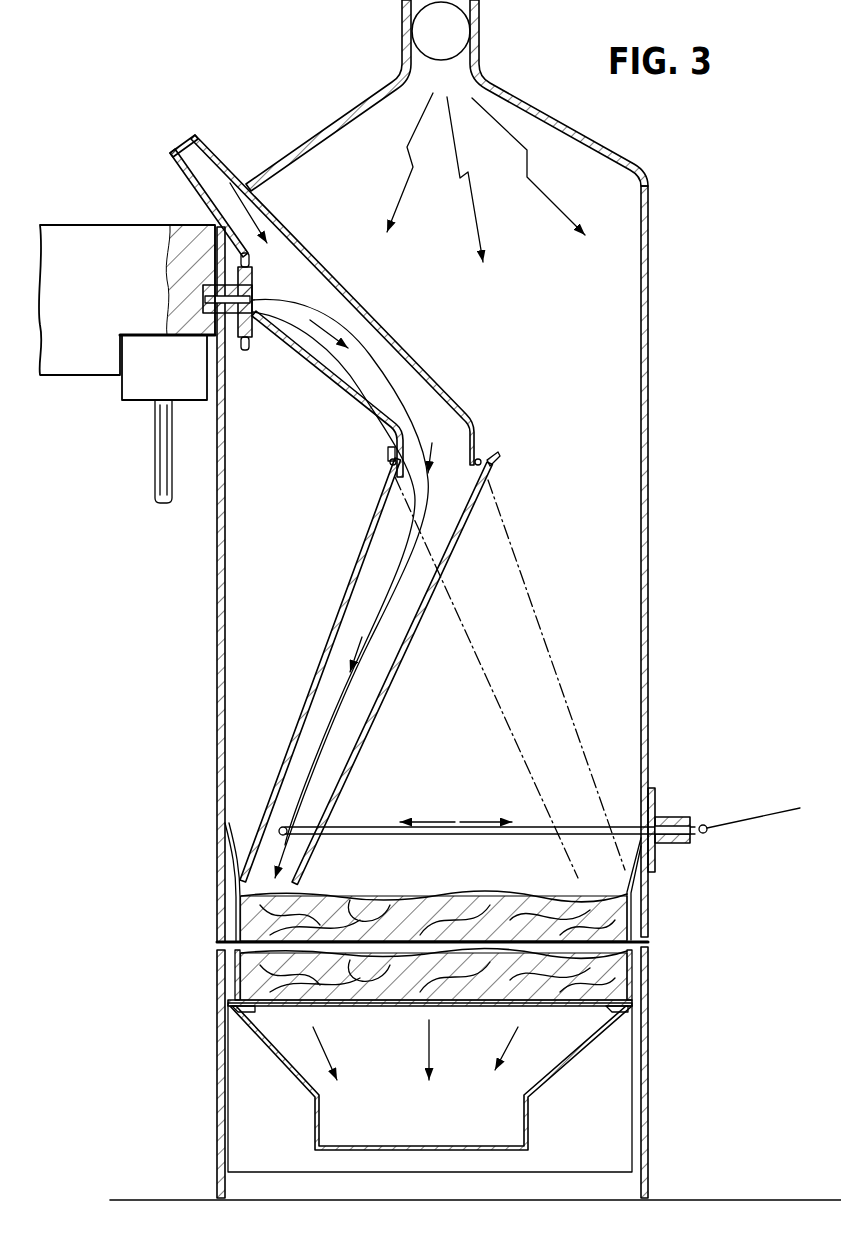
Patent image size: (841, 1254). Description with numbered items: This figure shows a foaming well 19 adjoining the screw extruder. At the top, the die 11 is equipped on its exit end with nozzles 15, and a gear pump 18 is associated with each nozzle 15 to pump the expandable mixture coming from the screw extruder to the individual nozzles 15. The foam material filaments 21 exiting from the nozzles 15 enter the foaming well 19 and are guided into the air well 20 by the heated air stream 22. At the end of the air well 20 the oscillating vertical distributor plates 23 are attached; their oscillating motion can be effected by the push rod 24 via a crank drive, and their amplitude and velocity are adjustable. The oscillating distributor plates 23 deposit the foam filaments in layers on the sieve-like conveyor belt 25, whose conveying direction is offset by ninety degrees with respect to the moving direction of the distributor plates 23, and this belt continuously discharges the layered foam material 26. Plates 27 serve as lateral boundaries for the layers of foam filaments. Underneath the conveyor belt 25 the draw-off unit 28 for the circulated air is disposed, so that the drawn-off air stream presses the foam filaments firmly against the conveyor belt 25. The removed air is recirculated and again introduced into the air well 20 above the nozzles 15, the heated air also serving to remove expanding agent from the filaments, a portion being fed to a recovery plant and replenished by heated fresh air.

The die 11 is at (80, 242).
The nozzles 15 is at (243, 348).
The gear pump 18 is at (135, 384).
The foaming well 19 is at (217, 558).
The air well 20 is at (308, 238).
The foam material filaments 21 is at (383, 366).
The heated air stream 22 is at (229, 190).
The oscillating vertical distributor plates 23 is at (447, 545).
The push rod 24 is at (578, 828).
The sieve-like conveyor belt 25 is at (355, 1004).
The layered foam material 26 is at (240, 922).
The plates 27 is at (240, 986).
The draw-off unit 28 is at (330, 1124).